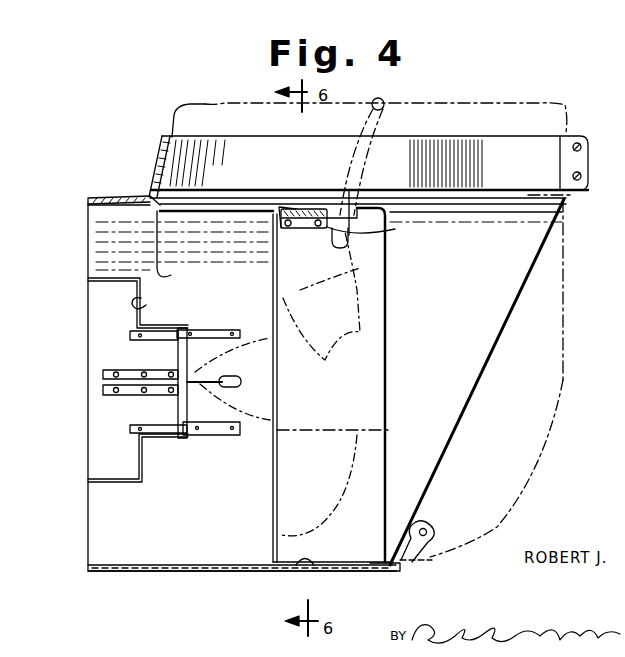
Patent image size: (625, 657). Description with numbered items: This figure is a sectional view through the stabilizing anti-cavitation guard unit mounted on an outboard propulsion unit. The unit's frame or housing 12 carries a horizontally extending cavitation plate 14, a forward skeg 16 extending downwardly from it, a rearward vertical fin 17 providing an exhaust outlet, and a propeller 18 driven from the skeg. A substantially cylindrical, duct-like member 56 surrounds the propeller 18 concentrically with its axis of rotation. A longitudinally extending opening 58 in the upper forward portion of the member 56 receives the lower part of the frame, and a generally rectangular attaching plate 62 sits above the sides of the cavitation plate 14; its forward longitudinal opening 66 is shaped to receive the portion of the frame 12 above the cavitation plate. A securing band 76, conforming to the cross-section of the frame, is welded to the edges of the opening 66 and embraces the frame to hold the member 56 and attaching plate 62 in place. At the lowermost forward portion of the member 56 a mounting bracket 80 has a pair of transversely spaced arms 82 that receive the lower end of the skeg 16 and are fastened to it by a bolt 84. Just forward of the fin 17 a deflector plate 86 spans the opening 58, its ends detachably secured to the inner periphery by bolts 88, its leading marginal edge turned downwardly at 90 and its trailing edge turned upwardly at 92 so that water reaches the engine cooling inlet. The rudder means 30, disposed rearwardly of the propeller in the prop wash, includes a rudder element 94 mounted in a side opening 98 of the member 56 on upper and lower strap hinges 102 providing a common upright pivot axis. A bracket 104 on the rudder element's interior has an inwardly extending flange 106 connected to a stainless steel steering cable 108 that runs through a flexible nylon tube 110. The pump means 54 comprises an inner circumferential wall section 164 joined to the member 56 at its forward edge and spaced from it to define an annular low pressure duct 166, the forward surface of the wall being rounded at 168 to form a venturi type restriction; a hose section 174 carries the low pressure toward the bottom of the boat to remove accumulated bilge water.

The frame or housing 12 is at (460, 104).
The cavitation plate 14 is at (572, 195).
The skeg 16 is at (540, 443).
The rearward vertical fin 17 is at (188, 265).
The propeller 18 is at (360, 268).
The rudder means 30 is at (84, 433).
The pump means 54 is at (272, 522).
The cylindrical member 56 is at (95, 242).
The longitudinally extending opening 58 is at (158, 163).
The attaching plate 62 is at (120, 196).
The forward longitudinal opening 66 is at (152, 207).
The securing band 76 is at (562, 136).
The mounting bracket 80 is at (395, 566).
The arms 82 is at (425, 545).
The bolt 84 is at (430, 525).
The deflector plate 86 is at (296, 212).
The bolts 88 is at (369, 228).
The downwardly turned leading marginal edge 90 is at (350, 200).
The upwardly turned trailing marginal edge 92 is at (283, 209).
The rudder element 94 is at (98, 320).
The opening 98 is at (146, 305).
The strap hinges 102 is at (179, 330).
The bracket 104 is at (126, 372).
The flange 106 is at (178, 365).
The steering cable 108 is at (212, 385).
The flexible tube 110 is at (231, 376).
The inner circumferential wall section 164 is at (287, 568).
The annular low pressure duct 166 is at (306, 568).
The rounded forward surface 168 is at (390, 567).
The hose section 174 is at (384, 99).